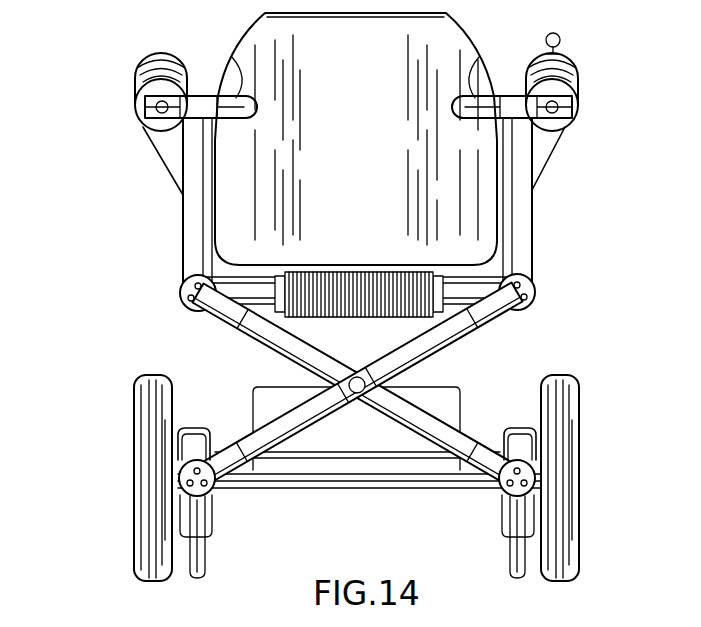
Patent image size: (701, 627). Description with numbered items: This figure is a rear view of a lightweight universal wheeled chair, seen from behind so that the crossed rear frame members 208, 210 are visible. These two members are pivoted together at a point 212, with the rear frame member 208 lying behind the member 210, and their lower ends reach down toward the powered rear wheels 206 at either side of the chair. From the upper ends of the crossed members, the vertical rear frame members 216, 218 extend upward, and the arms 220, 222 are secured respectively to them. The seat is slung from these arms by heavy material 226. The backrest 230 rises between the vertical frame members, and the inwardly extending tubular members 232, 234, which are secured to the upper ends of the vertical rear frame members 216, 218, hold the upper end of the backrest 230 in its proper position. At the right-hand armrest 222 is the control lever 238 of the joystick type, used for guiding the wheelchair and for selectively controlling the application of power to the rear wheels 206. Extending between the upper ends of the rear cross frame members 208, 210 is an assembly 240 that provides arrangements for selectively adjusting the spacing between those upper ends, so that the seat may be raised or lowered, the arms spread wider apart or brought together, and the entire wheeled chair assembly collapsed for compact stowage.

The powered rear wheels 206 is at (137, 488).
The rear frame member 208 is at (290, 407).
The rear frame member 210 is at (418, 407).
The pivot point 212 is at (366, 405).
The vertical rear frame member 216 is at (193, 250).
The vertical rear frame member 218 is at (525, 238).
The arm 220 is at (137, 112).
The arm 222 is at (575, 125).
The heavy material 226 is at (166, 170).
The backrest 230 is at (369, 153).
The inwardly extending tubular member 232 is at (238, 64).
The inwardly extending tubular member 234 is at (472, 64).
The control lever 238 is at (550, 34).
The adjusting assembly 240 is at (378, 310).